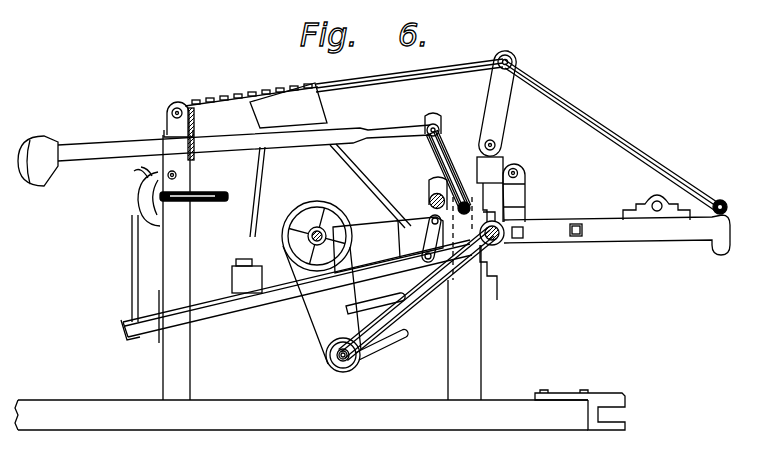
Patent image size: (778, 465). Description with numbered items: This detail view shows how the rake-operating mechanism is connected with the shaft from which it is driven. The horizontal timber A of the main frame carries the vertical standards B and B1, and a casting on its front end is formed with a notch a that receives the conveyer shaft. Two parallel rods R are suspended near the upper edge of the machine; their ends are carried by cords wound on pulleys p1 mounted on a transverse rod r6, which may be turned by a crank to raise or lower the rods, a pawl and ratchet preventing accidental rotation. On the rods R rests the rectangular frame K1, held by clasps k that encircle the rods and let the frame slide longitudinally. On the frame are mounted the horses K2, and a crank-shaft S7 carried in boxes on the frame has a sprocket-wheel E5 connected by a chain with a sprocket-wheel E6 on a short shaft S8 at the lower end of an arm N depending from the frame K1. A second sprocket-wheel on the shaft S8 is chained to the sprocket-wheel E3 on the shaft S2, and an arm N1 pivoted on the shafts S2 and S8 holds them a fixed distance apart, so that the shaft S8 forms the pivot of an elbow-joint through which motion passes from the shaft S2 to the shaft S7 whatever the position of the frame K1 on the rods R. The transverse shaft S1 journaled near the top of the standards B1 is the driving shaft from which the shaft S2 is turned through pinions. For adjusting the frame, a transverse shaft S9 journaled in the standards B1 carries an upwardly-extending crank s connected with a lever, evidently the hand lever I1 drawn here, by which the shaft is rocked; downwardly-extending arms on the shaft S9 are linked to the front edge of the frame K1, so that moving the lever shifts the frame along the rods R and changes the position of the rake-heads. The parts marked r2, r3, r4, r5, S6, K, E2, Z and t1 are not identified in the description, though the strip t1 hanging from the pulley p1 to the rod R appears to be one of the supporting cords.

The horizontal timber A is at (374, 420).
The notch a is at (611, 431).
The vertical standard B is at (174, 267).
The vertical standard B1 is at (482, 345).
The hand lever I1 is at (105, 145).
The lever pivot bracket r5 is at (176, 107).
The rack r4 is at (232, 94).
The connecting rod r3 is at (409, 76).
The connecting rod r2 is at (606, 138).
The transverse rod r6 is at (190, 196).
The crank s is at (441, 131).
The transverse shaft S1 is at (429, 194).
The shaft S2 is at (503, 229).
The bearing S6 is at (657, 212).
The crank-shaft S7 is at (381, 217).
The short shaft S8 is at (327, 369).
The transverse shaft S9 is at (496, 180).
The arm K is at (699, 231).
The rectangular frame K1 is at (262, 276).
The horse K2 is at (258, 190).
The clasp k is at (259, 306).
The belt E2 is at (315, 316).
The sprocket-wheel E3 is at (399, 341).
The sprocket-wheel E5 is at (352, 210).
The sprocket-wheel E6 is at (348, 373).
The arm N is at (343, 313).
The arm N1 is at (470, 278).
The link Z is at (428, 217).
The pulley p1 is at (141, 210).
The strip t1 is at (132, 262).
The rod R is at (126, 337).